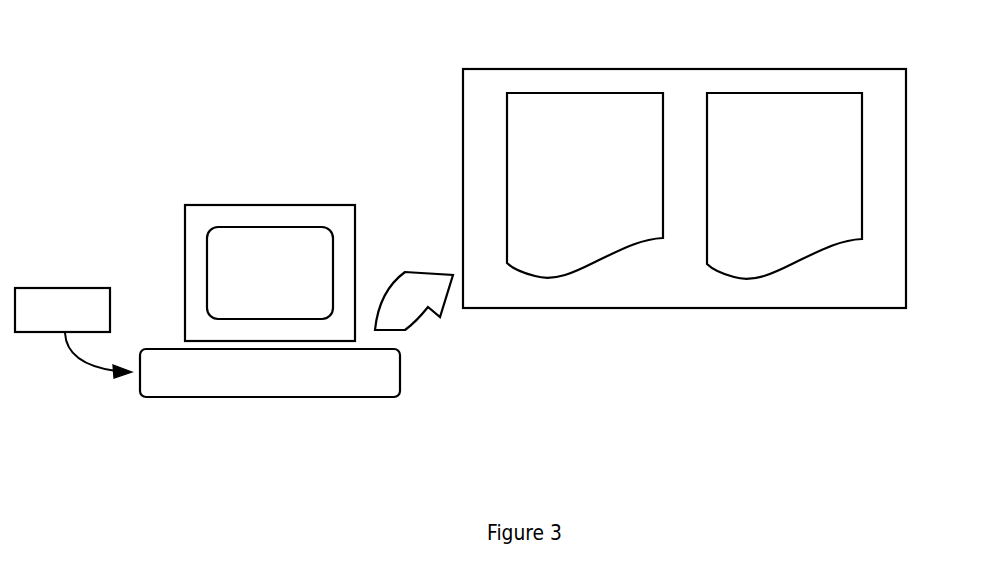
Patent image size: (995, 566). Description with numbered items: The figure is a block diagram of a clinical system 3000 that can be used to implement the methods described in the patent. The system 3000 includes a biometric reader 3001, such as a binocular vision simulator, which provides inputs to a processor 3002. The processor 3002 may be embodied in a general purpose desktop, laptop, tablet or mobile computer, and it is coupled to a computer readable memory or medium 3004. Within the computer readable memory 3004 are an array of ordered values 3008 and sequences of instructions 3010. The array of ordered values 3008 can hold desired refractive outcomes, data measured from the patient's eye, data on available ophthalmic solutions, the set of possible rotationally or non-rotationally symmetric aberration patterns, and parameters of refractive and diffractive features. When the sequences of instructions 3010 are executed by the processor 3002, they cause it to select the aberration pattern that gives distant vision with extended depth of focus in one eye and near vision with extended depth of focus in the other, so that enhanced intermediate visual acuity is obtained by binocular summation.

The clinical system 3000 is at (257, 86).
The biometric reader 3001 is at (52, 288).
The processor 3002 is at (400, 380).
The computer readable memory 3004 is at (487, 67).
The array of ordered values 3008 is at (603, 91).
The sequences of instructions 3010 is at (795, 93).